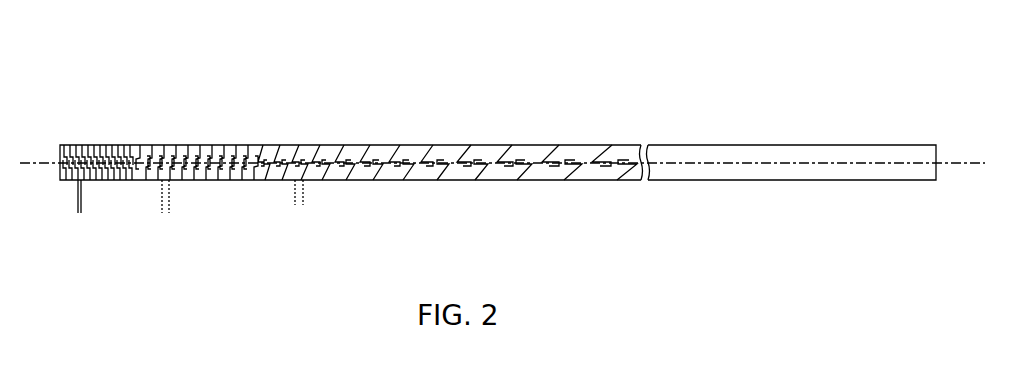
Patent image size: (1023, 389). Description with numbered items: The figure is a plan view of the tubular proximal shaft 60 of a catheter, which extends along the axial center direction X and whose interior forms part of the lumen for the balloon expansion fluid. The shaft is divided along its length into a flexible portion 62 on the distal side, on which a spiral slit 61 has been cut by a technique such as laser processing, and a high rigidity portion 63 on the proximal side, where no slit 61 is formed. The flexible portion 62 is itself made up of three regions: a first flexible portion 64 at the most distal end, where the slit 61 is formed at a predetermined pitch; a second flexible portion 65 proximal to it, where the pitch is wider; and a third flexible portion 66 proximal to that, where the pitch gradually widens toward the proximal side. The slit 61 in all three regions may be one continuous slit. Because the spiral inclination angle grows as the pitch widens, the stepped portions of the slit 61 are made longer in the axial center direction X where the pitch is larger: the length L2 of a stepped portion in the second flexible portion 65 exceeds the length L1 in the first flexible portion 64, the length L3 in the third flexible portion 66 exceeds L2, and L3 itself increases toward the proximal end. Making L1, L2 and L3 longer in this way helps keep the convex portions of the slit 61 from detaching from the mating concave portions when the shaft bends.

The proximal shaft 60 is at (80, 27).
The slit 61 is at (400, 180).
The flexible portion 62 is at (640, 65).
The high rigidity portion 63 is at (933, 65).
The first flexible portion 64 is at (135, 117).
The second flexible portion 65 is at (250, 117).
The third flexible portion 66 is at (643, 117).
The length of stepped portion in first flexible portion L1 is at (87, 210).
The length of stepped portion in second flexible portion L2 is at (175, 210).
The length of stepped portion in third flexible portion L3 is at (309, 202).
The axial center direction X is at (966, 163).